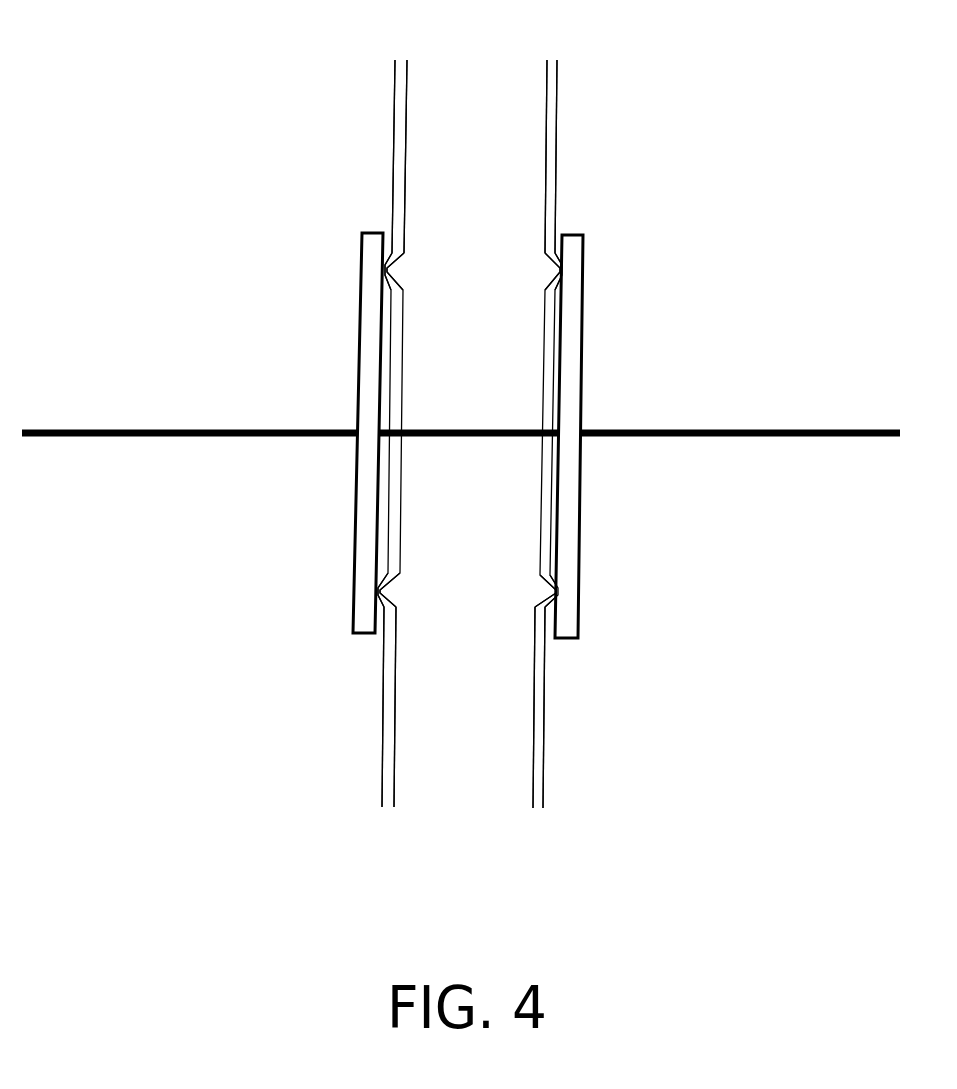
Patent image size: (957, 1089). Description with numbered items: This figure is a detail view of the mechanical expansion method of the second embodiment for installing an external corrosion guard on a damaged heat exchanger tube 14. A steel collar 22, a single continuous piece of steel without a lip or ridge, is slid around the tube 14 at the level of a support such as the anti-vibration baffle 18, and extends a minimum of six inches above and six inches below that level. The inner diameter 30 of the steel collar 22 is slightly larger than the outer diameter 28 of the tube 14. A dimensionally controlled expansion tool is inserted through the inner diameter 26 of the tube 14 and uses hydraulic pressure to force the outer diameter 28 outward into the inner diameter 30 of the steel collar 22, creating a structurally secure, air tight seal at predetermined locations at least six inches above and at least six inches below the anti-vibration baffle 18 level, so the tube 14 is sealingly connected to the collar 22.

The tube 14 is at (538, 778).
The anti-vibration baffle 18 is at (132, 437).
The steel collar 22 is at (372, 317).
The inner diameter of the tube 26 is at (547, 178).
The outer diameter of the tube 28 is at (395, 110).
The inner diameter of the steel collar 30 is at (380, 402).